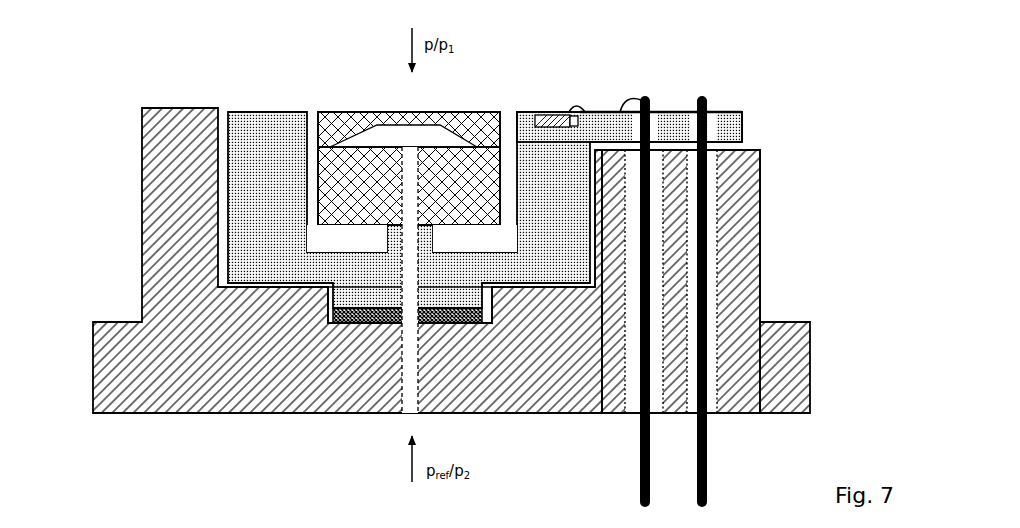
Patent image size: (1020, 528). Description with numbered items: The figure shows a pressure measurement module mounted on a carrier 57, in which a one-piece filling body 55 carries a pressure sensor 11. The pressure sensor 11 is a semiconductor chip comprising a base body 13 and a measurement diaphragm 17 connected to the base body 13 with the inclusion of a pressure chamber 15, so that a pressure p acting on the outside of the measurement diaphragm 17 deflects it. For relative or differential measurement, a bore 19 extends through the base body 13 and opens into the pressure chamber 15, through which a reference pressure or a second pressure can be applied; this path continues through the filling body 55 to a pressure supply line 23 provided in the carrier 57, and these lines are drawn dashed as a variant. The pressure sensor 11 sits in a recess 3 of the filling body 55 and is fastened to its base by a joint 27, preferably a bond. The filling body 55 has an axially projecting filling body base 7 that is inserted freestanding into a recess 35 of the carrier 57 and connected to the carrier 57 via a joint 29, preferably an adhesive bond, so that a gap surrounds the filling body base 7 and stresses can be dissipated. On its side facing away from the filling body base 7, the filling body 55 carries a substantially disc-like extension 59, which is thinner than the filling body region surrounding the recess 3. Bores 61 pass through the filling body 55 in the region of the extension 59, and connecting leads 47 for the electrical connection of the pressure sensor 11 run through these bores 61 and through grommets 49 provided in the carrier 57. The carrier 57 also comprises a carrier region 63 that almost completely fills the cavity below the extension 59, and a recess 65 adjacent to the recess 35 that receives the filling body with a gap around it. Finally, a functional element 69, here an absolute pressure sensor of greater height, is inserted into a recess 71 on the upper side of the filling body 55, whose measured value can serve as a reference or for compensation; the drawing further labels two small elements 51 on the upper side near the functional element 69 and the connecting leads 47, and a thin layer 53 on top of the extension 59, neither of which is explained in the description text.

The recess 3 is at (478, 248).
The filling body base 7 is at (437, 297).
The pressure sensor 11 is at (390, 104).
The base body 13 is at (350, 180).
The pressure chamber 15 is at (403, 137).
The measurement diaphragm 17 is at (418, 118).
The bore 19 is at (410, 199).
The pressure supply line 23 is at (405, 378).
The joint 27 is at (392, 230).
The joint 29 is at (377, 315).
The recess 35 is at (487, 303).
The connecting leads 47 is at (650, 307).
The grommets 49 is at (655, 378).
The bond wires 51 is at (572, 105).
The conductive layer 53 is at (610, 112).
The filling body 55 is at (268, 135).
The carrier 57 is at (223, 333).
The extension 59 is at (740, 122).
The bores 61 is at (653, 122).
The carrier region 63 is at (743, 247).
The recess 65 is at (597, 157).
The functional element 69 is at (545, 108).
The recess 71 is at (577, 125).